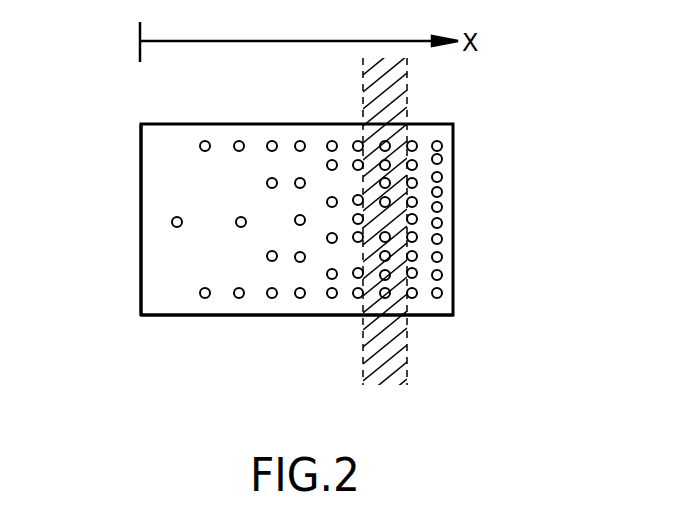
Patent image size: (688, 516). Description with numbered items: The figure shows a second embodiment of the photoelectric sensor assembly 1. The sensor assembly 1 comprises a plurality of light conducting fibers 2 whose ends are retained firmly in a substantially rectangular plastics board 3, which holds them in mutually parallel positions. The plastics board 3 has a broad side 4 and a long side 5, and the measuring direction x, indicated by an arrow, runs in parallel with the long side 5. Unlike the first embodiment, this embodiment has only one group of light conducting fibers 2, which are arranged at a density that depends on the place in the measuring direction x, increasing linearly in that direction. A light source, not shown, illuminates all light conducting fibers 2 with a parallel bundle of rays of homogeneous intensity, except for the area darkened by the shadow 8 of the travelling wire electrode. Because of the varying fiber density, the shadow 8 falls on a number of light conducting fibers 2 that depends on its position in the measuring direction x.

The sensor assembly 1 is at (333, 227).
The light conducting fibers 2 is at (172, 223).
The plastics board 3 is at (167, 272).
The broad side 4 is at (140, 163).
The long side 5 is at (297, 316).
The shadow 8 is at (478, 201).